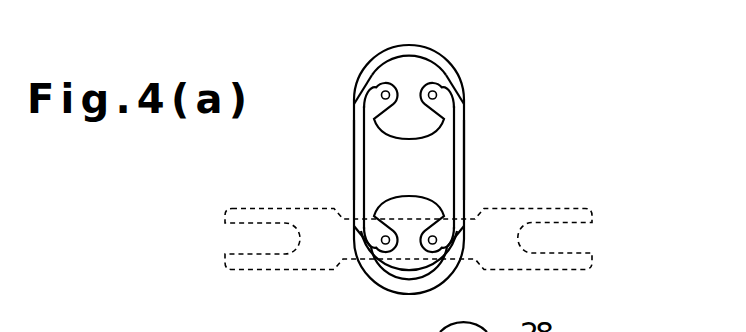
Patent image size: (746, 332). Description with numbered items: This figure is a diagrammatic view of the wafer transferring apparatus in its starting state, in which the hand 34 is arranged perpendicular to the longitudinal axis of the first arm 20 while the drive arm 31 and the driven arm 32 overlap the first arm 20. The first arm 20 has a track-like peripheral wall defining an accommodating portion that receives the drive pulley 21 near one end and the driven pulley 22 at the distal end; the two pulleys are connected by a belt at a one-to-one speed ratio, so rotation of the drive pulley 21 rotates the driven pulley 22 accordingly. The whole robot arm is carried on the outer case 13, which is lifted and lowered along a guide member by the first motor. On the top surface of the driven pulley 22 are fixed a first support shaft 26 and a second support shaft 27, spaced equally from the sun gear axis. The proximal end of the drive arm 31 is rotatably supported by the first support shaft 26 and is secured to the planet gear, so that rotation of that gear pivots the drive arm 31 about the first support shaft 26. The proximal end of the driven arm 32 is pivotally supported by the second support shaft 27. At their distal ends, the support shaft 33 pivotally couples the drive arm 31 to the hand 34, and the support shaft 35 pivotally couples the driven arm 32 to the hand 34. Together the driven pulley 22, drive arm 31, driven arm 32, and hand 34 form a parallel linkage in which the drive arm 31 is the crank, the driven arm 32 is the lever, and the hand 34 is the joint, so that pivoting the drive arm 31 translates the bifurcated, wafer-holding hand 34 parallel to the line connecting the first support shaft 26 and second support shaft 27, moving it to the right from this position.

The outer case 13 is at (447, 287).
The first arm 20 is at (456, 66).
The drive pulley 21 is at (407, 186).
The driven pulley 22 is at (416, 56).
The first support shaft 26 is at (379, 84).
The second support shaft 27 is at (455, 95).
The drive arm 31 is at (353, 150).
The driven arm 32 is at (465, 142).
The support shaft 33 is at (375, 262).
The hand 34 is at (563, 208).
The support shaft 35 is at (428, 243).